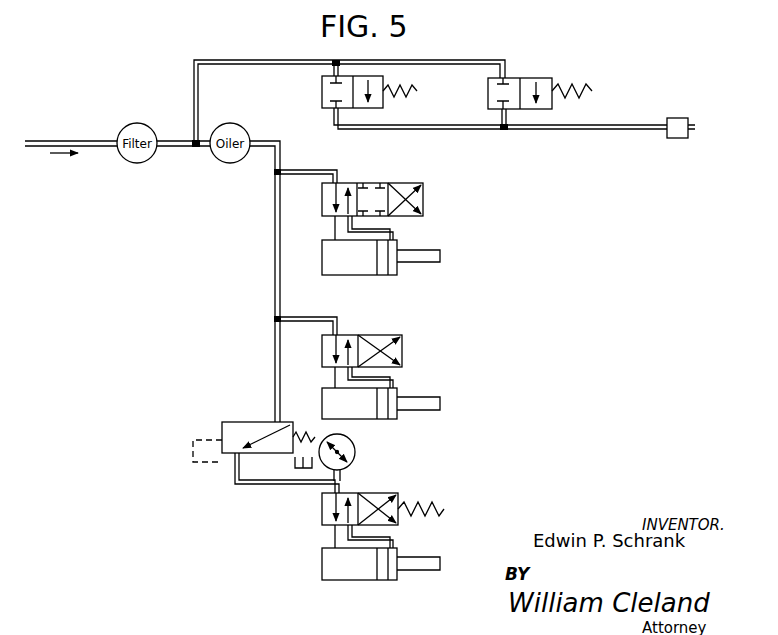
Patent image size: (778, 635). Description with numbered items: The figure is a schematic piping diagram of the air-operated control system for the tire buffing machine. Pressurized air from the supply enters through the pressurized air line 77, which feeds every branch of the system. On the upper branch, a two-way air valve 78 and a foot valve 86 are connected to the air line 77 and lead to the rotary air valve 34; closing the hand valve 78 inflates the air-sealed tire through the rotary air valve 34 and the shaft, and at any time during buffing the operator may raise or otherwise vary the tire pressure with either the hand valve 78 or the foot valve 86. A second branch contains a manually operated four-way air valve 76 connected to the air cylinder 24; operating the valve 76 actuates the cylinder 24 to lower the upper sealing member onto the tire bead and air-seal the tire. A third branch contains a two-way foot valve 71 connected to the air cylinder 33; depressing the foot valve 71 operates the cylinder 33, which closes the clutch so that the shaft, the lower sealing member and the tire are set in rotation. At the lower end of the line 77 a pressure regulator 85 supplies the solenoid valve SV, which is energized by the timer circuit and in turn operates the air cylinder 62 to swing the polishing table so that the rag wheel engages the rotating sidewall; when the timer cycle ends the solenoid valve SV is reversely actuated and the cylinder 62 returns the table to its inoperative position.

The pressurized air line 77 is at (100, 148).
The foot valve 86 is at (331, 108).
The two-way air valve 78 is at (529, 76).
The rotary air valve 34 is at (684, 118).
The four-way air valve 76 is at (399, 186).
The air cylinder 24 is at (357, 275).
The two-way foot valve 71 is at (370, 338).
The air cylinder 33 is at (368, 419).
The pressure regulator 85 is at (243, 422).
The solenoid valve SV is at (362, 494).
The air cylinder 62 is at (345, 580).